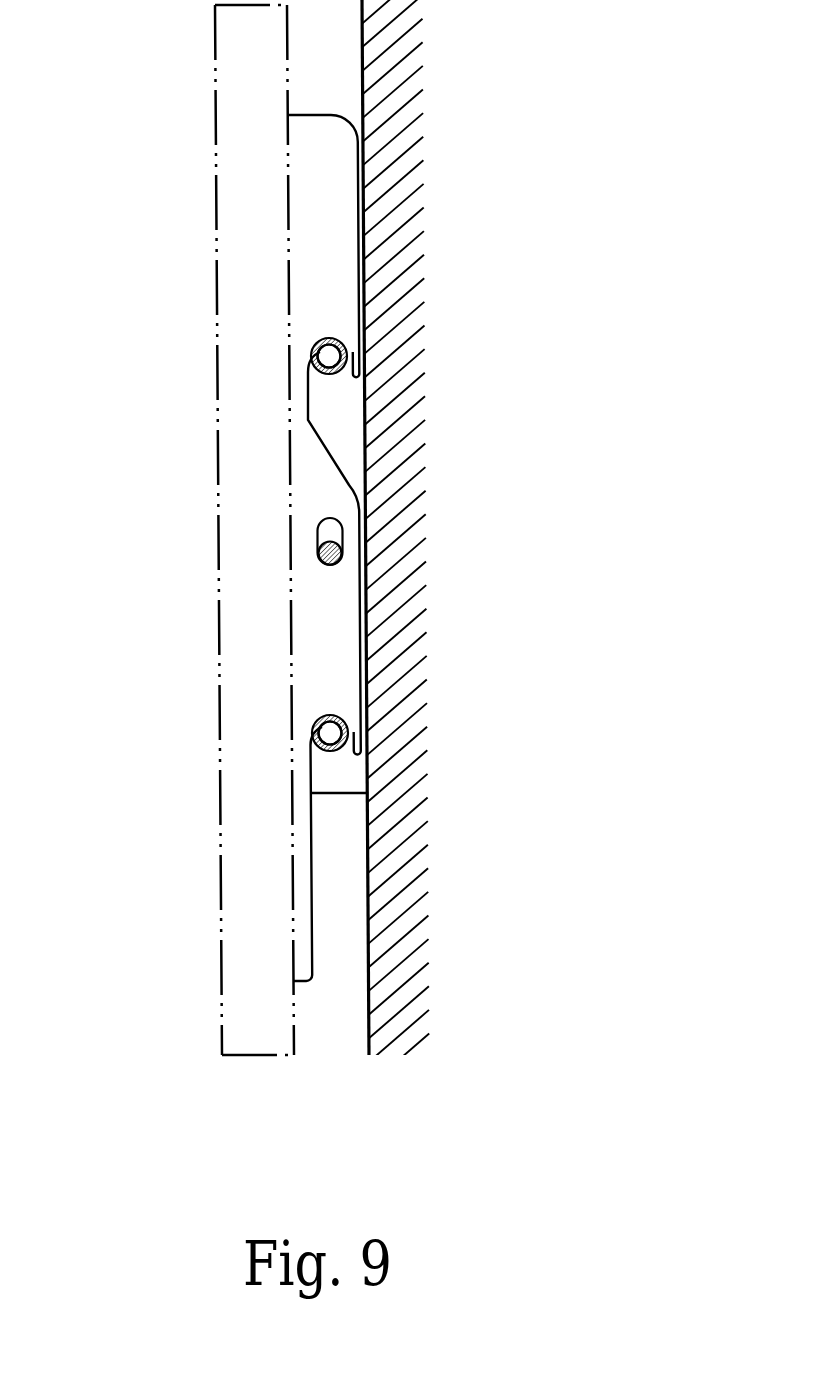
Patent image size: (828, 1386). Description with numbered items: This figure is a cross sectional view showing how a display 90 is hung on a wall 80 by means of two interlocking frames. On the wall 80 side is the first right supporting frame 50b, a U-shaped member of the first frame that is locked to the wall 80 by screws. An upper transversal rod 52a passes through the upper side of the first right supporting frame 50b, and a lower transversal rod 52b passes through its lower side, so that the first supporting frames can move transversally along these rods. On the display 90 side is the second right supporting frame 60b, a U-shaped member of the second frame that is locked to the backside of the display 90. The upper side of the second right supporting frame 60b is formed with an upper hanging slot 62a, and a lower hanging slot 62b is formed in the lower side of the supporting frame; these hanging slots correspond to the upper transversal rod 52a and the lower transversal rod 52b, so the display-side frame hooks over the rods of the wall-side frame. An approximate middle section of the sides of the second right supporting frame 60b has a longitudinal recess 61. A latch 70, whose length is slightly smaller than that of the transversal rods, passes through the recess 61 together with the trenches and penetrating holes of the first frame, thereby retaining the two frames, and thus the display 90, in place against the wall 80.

The wall 80 is at (400, 70).
The display 90 is at (217, 527).
The second right supporting frame 60b is at (342, 203).
The first right supporting frame 50b is at (345, 472).
The upper transversal rod 52a is at (348, 353).
The upper hanging slot 62a is at (485, 378).
The lower transversal rod 52b is at (349, 732).
The lower hanging slot 62b is at (487, 755).
The longitudinal recess 61 is at (330, 532).
The latch 70 is at (342, 557).